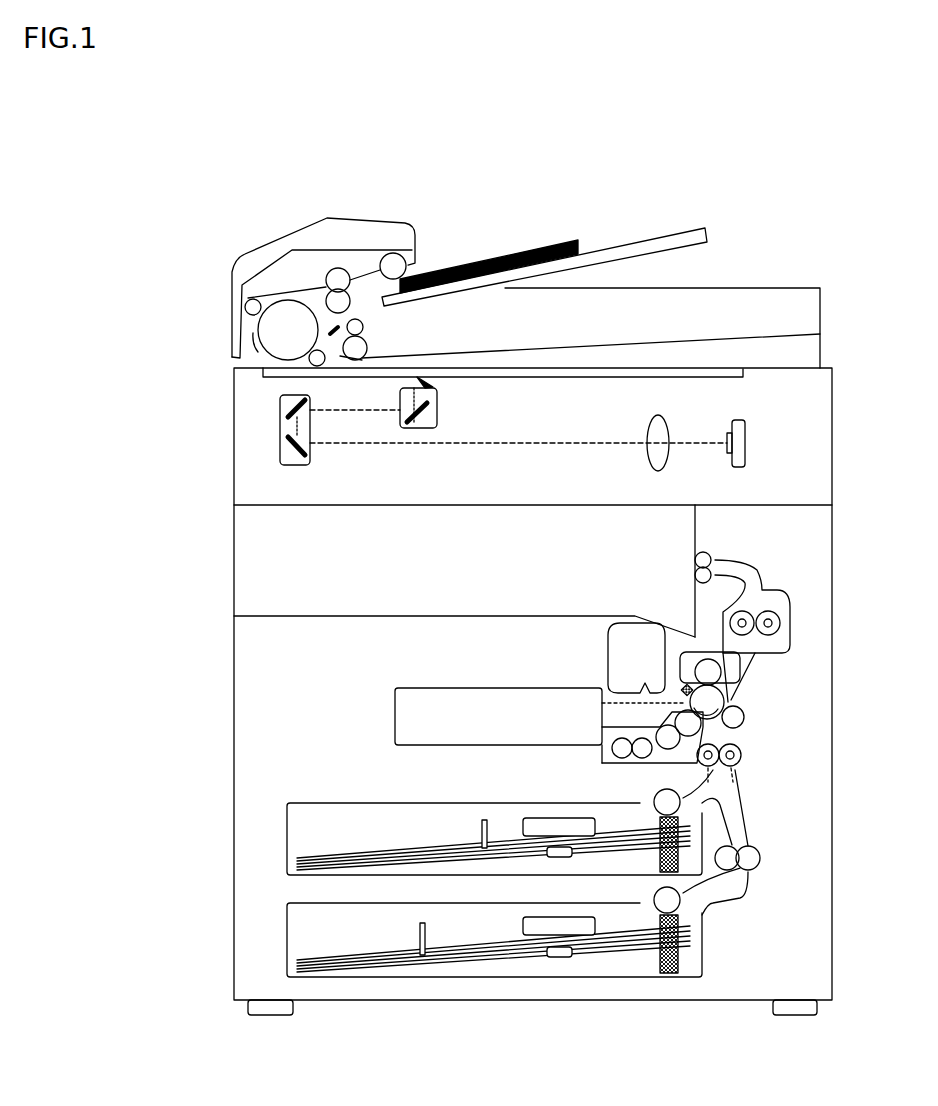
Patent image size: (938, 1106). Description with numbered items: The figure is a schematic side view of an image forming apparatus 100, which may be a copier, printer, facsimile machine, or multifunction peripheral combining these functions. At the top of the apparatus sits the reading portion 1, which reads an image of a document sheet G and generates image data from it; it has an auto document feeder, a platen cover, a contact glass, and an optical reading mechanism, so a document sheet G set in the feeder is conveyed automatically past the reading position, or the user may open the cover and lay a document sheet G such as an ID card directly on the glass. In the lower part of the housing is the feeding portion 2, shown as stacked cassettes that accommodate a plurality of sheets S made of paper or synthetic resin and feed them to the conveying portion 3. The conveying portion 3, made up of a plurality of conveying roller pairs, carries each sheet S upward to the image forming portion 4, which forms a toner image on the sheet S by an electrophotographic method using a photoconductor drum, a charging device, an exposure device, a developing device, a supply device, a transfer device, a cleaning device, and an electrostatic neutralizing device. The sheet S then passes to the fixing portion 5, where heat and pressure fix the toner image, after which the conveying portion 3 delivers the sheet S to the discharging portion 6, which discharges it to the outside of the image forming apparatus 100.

The image forming apparatus 100 is at (788, 218).
The reading portion 1 is at (212, 293).
The document sheet G is at (503, 252).
The discharging portion 6 is at (692, 565).
The fixing portion 5 is at (790, 640).
The image forming portion 4 is at (760, 706).
The feeding portion 2 is at (267, 790).
The sheet S is at (482, 820).
The conveying portion 3 is at (748, 912).